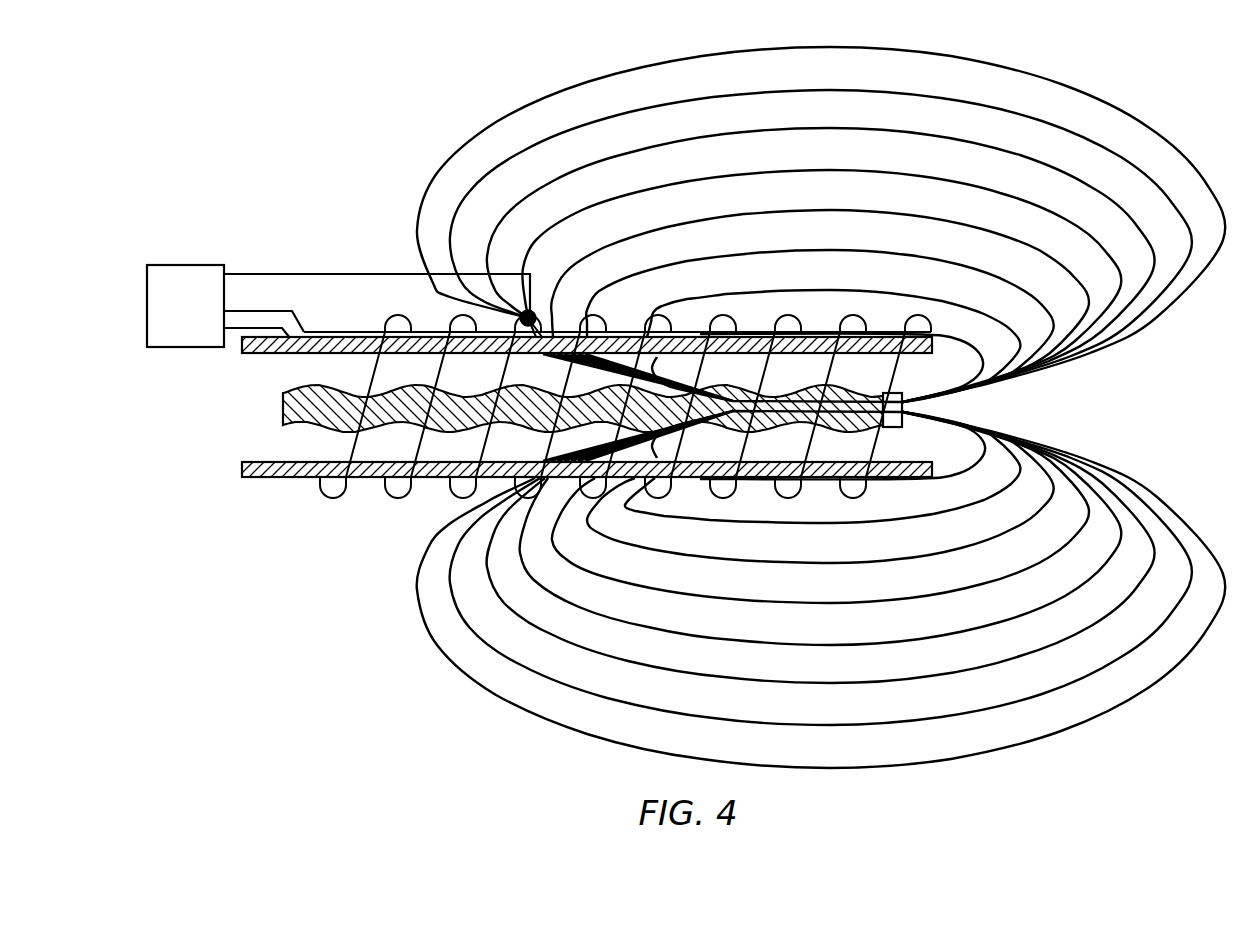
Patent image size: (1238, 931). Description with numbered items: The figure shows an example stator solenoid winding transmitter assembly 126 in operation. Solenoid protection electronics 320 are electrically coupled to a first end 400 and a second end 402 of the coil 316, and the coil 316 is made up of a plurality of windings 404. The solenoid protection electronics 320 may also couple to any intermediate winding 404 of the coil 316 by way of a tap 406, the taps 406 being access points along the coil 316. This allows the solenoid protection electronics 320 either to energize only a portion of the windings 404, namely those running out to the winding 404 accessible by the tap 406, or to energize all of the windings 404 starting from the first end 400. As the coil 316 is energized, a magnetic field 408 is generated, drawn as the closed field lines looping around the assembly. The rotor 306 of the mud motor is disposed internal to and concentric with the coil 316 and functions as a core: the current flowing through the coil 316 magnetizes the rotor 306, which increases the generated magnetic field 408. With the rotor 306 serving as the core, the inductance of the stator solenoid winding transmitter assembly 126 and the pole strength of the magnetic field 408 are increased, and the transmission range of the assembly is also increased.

The stator solenoid winding transmitter assembly 126 is at (372, 541).
The rotor 306 is at (283, 408).
The coil 316 is at (270, 370).
The solenoid protection electronics 320 is at (203, 319).
The first end 400 is at (303, 326).
The second end 402 is at (935, 333).
The winding 404 is at (357, 442).
The tap 406 is at (522, 312).
The magnetic field 408 is at (1148, 121).